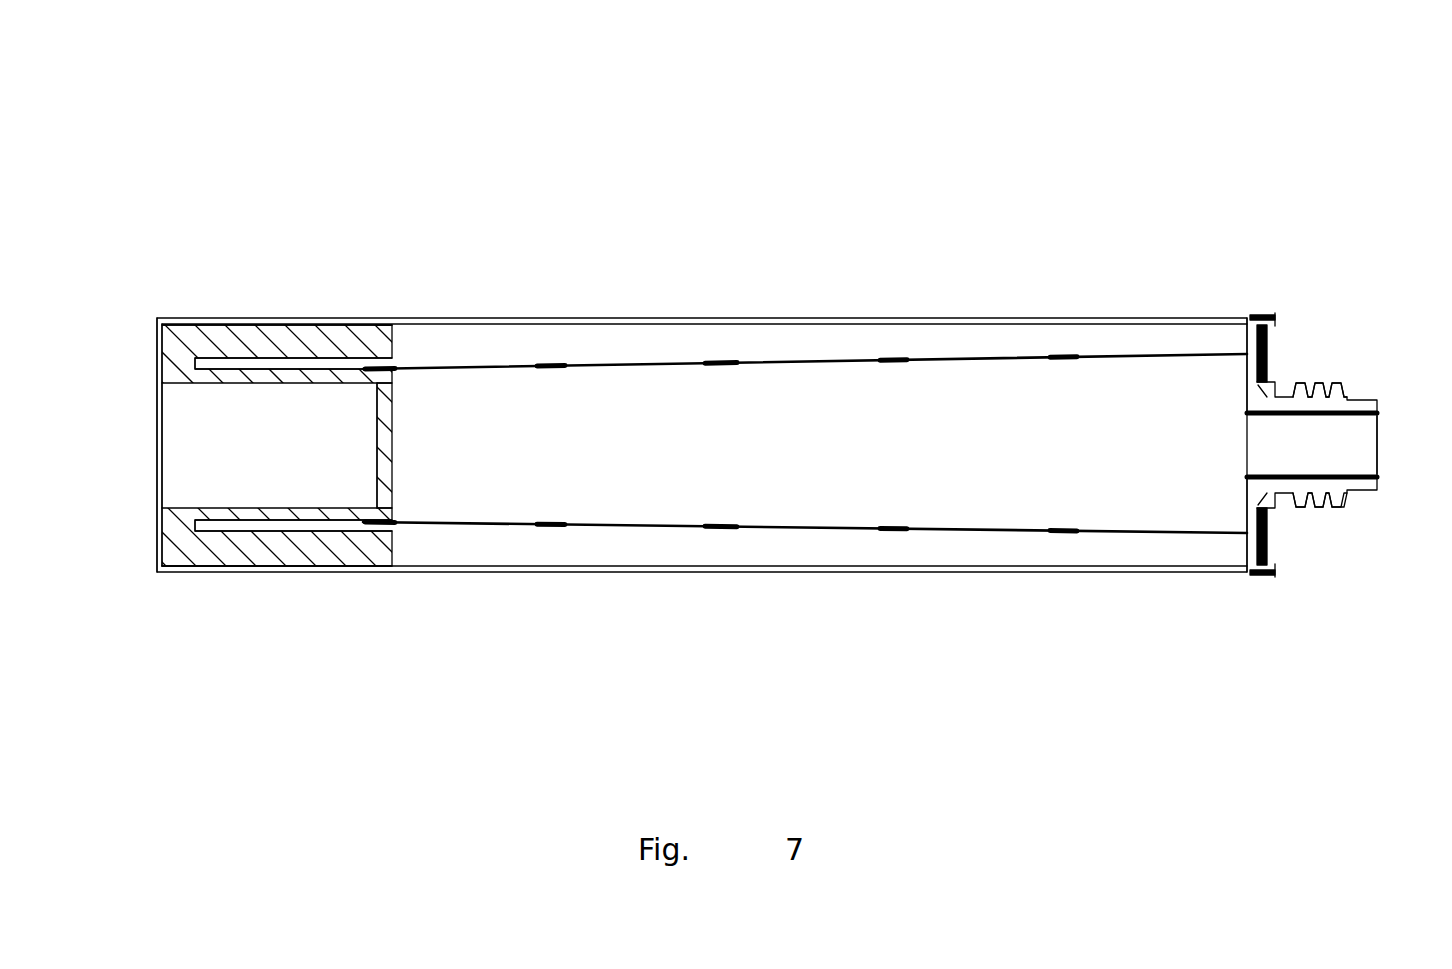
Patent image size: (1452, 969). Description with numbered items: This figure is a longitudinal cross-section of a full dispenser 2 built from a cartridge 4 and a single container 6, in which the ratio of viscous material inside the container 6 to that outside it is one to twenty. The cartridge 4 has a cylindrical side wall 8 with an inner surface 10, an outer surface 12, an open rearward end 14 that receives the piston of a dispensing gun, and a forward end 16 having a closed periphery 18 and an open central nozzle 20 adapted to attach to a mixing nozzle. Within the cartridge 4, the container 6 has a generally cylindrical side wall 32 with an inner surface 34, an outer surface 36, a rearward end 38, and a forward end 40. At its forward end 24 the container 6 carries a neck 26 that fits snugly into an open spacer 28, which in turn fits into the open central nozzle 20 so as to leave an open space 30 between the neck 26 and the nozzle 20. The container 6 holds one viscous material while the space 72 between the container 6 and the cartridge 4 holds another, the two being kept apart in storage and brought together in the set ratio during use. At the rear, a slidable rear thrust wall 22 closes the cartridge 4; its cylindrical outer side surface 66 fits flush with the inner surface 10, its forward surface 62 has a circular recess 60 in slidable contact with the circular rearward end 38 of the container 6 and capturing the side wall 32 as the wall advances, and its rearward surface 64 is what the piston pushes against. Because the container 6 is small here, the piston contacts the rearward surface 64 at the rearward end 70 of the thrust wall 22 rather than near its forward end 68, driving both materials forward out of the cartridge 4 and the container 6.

The dispenser 2 is at (728, 197).
The cartridge 4 is at (599, 316).
The container 6 is at (980, 355).
The cylindrical side wall 8 is at (1050, 316).
The inner surface 10 is at (663, 563).
The outer surface 12 is at (747, 574).
The rearward end 14 is at (168, 573).
The forward end 16 is at (1262, 572).
The closed periphery 18 is at (1270, 533).
The open central nozzle 20 is at (1329, 507).
The rear thrust wall 22 is at (246, 344).
The forward end 24 is at (1227, 348).
The neck 26 is at (1337, 416).
The open spacer 28 is at (1353, 398).
The open space 30 is at (1332, 477).
The cylindrical side wall 32 is at (772, 530).
The inner surface 34 is at (808, 521).
The outer surface 36 is at (965, 533).
The rearward end 38 is at (397, 527).
The forward end 40 is at (1220, 531).
The circular recess 60 is at (394, 360).
The forward surface 62 is at (394, 430).
The rearward surface 64 is at (372, 447).
The outer side surface 66 is at (196, 322).
The forward end 68 is at (375, 322).
The rearward end 70 is at (190, 563).
The space 72 is at (808, 345).